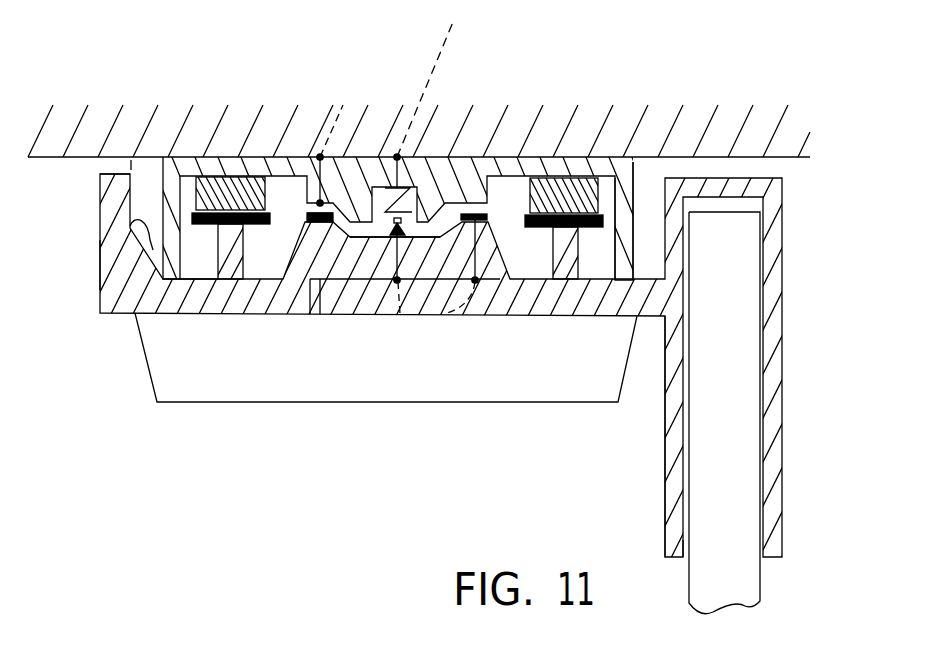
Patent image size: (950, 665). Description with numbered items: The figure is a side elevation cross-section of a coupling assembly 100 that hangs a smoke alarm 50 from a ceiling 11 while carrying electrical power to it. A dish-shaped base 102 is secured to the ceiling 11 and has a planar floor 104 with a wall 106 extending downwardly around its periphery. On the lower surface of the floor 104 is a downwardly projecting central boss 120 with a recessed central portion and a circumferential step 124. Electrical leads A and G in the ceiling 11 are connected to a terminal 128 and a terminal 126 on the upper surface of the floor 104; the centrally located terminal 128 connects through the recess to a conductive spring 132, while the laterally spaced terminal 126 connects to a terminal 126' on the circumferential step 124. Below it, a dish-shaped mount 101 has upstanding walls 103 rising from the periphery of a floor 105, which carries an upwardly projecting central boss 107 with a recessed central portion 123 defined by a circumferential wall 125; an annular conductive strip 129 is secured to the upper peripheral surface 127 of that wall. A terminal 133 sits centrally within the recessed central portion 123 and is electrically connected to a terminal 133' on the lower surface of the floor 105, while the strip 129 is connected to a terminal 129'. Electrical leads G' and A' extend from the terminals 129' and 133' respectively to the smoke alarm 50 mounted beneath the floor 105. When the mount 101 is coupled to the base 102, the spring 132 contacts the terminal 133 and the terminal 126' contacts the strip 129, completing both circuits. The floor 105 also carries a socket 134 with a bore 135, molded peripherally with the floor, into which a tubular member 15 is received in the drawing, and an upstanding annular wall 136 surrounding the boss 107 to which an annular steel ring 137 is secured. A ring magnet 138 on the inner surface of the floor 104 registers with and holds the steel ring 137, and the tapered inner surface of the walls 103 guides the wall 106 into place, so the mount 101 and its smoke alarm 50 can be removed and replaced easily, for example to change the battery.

The ceiling 11 is at (165, 185).
The tube 15 is at (697, 590).
The smoke alarm 50 is at (227, 402).
The assembly 100 is at (152, 420).
The mount 101 is at (122, 313).
The base 102 is at (648, 172).
The upstanding walls 103 is at (100, 250).
The floor 104 is at (160, 175).
The floor 105 is at (203, 276).
The wall 106 is at (636, 215).
The central boss 107 is at (520, 266).
The central boss 120 is at (478, 198).
The recessed central portion 123 is at (352, 231).
The circumferential step 124 is at (545, 205).
The circumferential wall 125 is at (318, 314).
The terminal 126 is at (303, 137).
The terminal 126' is at (248, 146).
The upper peripheral surface 127 is at (307, 214).
The terminal 128 is at (398, 156).
The annular conductive strip 129 is at (532, 152).
The terminal 129' is at (526, 287).
The conductive spring 132 is at (372, 200).
The terminal 133 is at (437, 178).
The terminal 133' is at (432, 340).
The socket 134 is at (665, 405).
The bore 135 is at (690, 538).
The annular wall 136 is at (248, 265).
The annular steel ring 137 is at (620, 187).
The ring magnet 138 is at (130, 226).
The electrical lead A is at (430, 78).
The electrical lead A' is at (399, 322).
The electrical lead G is at (335, 140).
The electrical lead G' is at (475, 321).